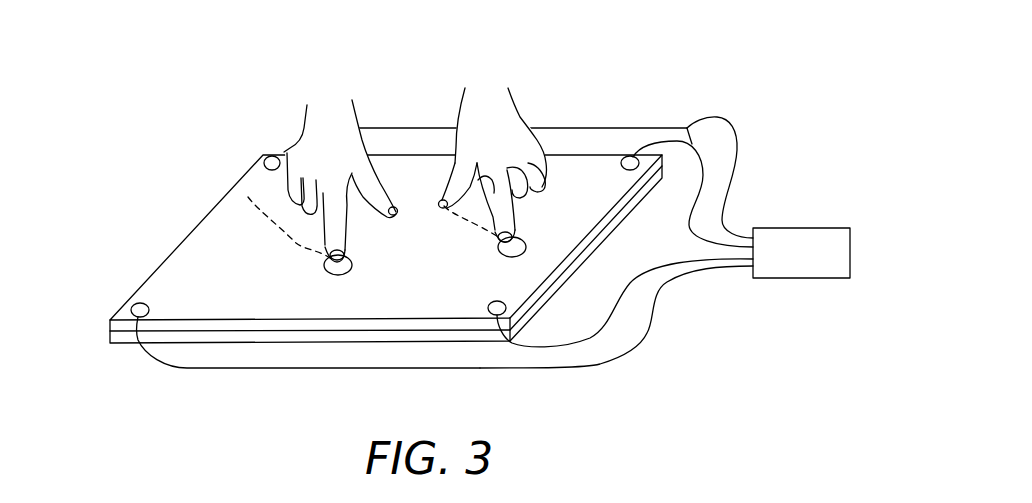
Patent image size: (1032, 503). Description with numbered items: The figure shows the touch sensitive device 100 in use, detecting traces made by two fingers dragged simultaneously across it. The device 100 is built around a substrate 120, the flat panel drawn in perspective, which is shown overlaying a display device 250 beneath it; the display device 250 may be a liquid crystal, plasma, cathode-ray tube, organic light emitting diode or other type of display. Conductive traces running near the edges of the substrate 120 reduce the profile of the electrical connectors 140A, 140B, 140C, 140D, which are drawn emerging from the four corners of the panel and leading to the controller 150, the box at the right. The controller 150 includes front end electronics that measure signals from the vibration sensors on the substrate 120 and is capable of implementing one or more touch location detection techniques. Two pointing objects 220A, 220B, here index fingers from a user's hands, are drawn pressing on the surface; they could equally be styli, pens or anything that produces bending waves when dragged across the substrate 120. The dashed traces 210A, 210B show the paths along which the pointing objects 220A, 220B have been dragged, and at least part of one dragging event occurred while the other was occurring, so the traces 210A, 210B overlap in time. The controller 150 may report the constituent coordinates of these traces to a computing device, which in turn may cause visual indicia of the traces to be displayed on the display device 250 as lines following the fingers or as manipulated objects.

The touch sensitive device 100 is at (774, 62).
The substrate 120 is at (602, 189).
The electrical connector 140A is at (588, 128).
The electrical connector 140B is at (693, 131).
The electrical connector 140C is at (180, 368).
The electrical connector 140D is at (593, 337).
The controller 150 is at (797, 228).
The trace 210A is at (297, 245).
The trace 210B is at (470, 225).
The pointing object 220A is at (337, 120).
The pointing object 220B is at (505, 107).
The display device 250 is at (123, 338).